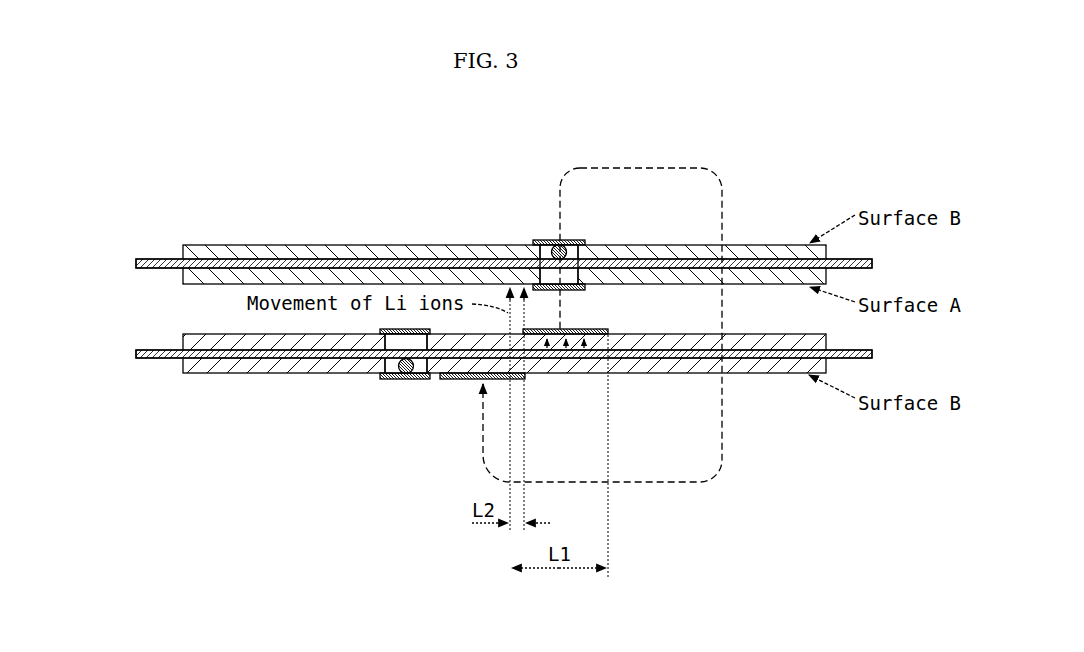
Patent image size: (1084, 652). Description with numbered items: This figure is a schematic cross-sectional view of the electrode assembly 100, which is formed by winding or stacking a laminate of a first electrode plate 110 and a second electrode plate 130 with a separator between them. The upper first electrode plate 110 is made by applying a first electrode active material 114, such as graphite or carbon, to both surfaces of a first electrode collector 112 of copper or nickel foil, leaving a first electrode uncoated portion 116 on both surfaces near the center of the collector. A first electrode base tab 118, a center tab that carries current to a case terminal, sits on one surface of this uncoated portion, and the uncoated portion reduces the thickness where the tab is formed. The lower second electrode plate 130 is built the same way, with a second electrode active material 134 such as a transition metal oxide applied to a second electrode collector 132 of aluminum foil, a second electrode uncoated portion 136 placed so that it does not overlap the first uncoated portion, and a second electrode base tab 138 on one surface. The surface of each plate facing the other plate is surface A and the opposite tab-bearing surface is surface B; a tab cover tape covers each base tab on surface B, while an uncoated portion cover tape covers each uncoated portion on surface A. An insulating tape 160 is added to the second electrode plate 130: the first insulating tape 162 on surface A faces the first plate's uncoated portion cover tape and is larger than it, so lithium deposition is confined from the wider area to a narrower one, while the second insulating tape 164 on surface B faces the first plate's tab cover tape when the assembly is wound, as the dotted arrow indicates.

The electrode assembly 100 is at (76, 140).
The first electrode plate 110 is at (466, 244).
The first electrode collector 112 is at (136, 263).
The first electrode active material 114 is at (185, 275).
The first electrode uncoated portion 116 is at (562, 274).
The first electrode base tab 118 is at (537, 258).
The second electrode plate 130 is at (466, 395).
The second electrode collector 132 is at (136, 353).
The second electrode active material 134 is at (185, 366).
The second electrode uncoated portion 136 is at (398, 344).
The second electrode base tab 138 is at (406, 375).
The insulating tape 160 is at (570, 395).
The first insulating tape 162 is at (608, 331).
The second insulating tape 164 is at (527, 380).